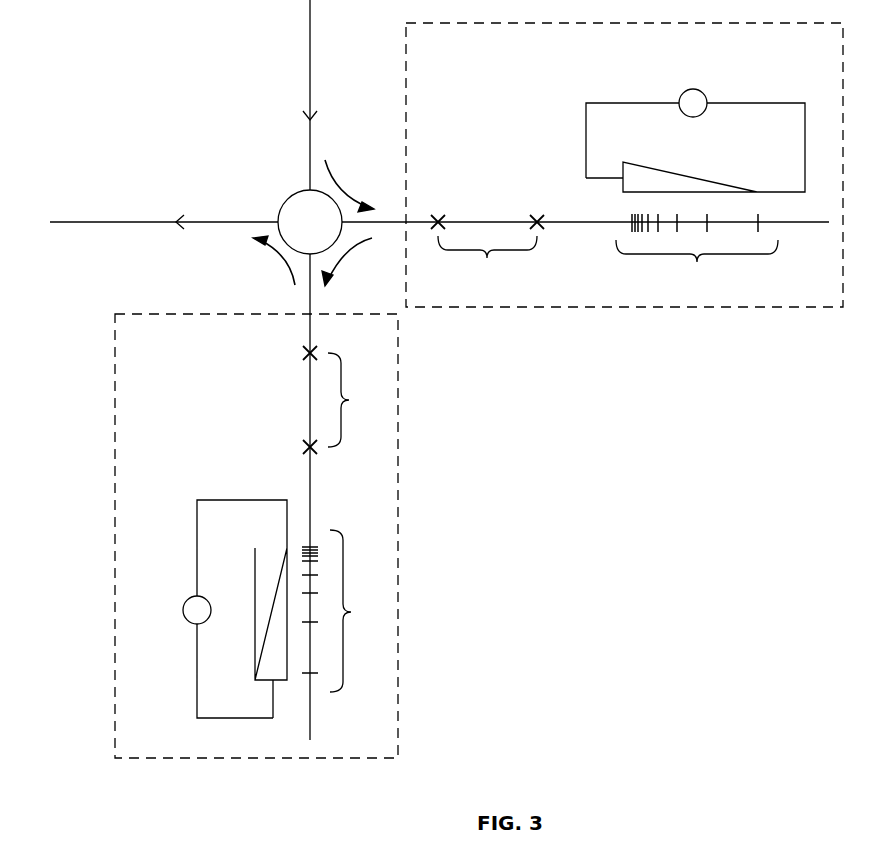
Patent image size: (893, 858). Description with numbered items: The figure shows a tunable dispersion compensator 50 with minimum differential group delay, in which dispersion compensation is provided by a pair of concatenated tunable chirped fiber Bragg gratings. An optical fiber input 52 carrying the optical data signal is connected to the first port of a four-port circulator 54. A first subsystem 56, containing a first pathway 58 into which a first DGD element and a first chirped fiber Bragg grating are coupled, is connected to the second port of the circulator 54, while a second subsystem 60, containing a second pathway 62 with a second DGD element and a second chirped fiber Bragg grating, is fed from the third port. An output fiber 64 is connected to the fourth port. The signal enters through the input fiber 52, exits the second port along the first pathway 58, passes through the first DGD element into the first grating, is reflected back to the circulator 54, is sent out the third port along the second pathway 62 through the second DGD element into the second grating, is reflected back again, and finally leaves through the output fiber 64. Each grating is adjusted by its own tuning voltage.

The tunable dispersion compensator system 50 is at (766, 640).
The input fiber 52 is at (344, 15).
The optical circulator 54 is at (298, 186).
The first compensation stage 56 is at (446, 53).
The first chirped fiber Bragg grating assembly 58 is at (580, 220).
The second compensation stage 60 is at (157, 347).
The second chirped fiber Bragg grating assembly 62 is at (310, 492).
The output fiber 64 is at (80, 214).